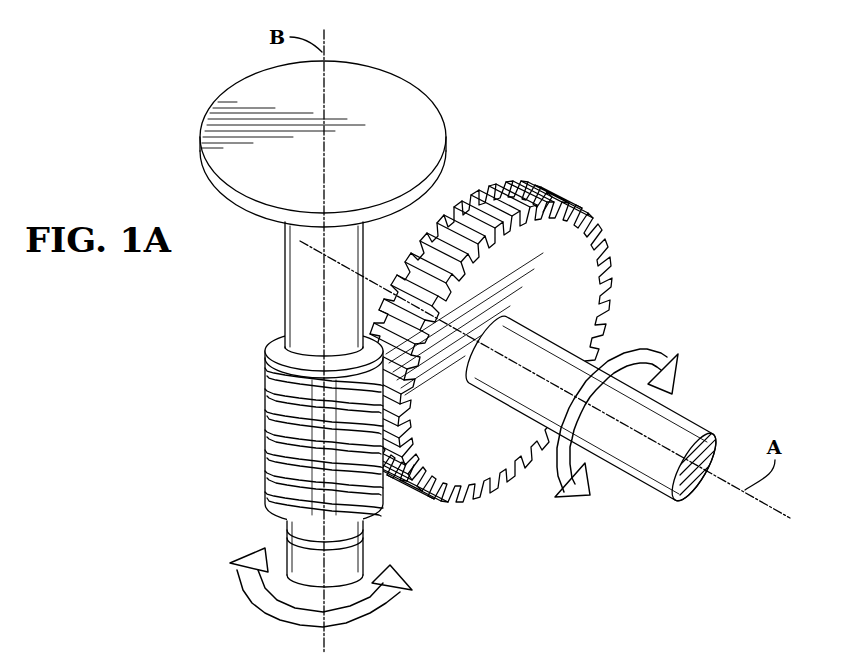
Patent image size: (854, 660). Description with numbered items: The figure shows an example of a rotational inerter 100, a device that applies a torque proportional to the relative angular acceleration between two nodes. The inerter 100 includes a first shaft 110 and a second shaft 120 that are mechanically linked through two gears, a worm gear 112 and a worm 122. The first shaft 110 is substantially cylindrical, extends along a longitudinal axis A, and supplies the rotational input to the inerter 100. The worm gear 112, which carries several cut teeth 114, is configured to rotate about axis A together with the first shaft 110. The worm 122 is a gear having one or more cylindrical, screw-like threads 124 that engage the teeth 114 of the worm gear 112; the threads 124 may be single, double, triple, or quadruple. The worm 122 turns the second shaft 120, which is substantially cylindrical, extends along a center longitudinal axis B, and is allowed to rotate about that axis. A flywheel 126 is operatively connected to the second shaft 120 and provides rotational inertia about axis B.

The inerter 100 is at (590, 150).
The first shaft 110 is at (677, 432).
The worm gear 112 is at (580, 303).
The cut teeth 114 is at (478, 183).
The second shaft 120 is at (297, 272).
The worm 122 is at (263, 466).
The threads 124 is at (263, 412).
The flywheel 126 is at (249, 128).